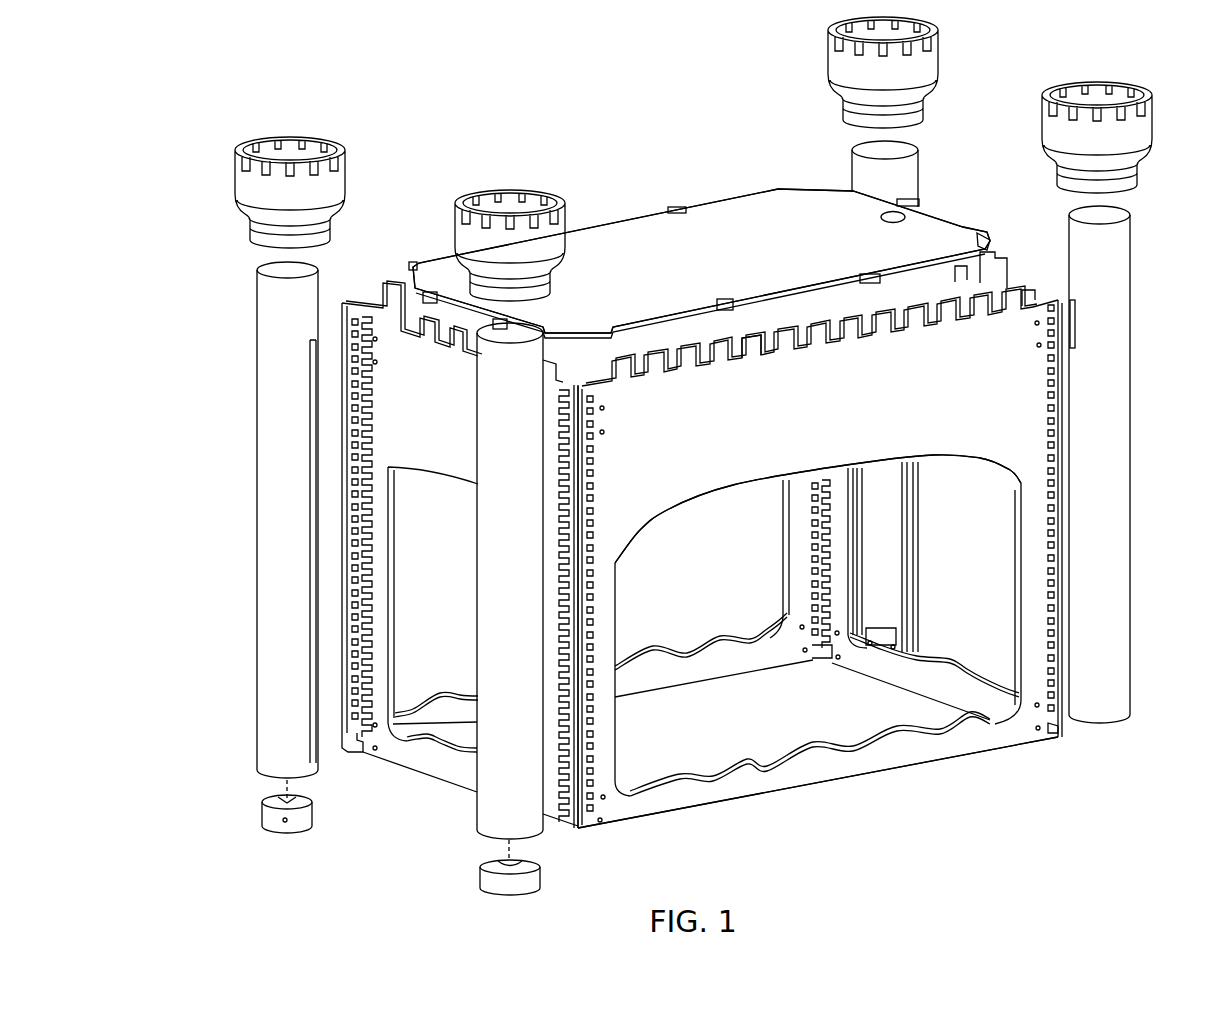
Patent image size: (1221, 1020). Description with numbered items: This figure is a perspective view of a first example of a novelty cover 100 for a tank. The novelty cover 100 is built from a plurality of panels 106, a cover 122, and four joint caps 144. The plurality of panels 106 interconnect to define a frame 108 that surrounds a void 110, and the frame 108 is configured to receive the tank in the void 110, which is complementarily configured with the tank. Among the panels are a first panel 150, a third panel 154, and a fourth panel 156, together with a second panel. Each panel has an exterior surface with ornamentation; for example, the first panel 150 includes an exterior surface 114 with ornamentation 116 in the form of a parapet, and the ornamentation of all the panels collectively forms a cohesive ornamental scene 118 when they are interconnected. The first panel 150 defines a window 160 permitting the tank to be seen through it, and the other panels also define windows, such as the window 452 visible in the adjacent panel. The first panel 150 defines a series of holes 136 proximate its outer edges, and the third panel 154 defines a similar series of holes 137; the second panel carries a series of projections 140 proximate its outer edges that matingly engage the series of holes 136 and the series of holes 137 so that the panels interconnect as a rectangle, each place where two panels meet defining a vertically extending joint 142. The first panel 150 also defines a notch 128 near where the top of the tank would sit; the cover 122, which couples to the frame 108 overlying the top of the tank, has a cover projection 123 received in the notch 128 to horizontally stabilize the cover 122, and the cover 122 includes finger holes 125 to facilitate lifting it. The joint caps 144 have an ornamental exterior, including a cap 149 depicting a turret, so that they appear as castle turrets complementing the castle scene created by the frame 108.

The novelty cover 100 is at (150, 95).
The plurality of panels 106 is at (780, 821).
The frame 108 is at (384, 276).
The void 110 is at (730, 622).
The exterior surface 114 is at (855, 405).
The ornamentation 116 is at (948, 338).
The cohesive ornamental scene 118 is at (578, 183).
The cover 122 is at (715, 220).
The cover projection 123 is at (727, 299).
The finger holes 125 is at (885, 213).
The notch 128 is at (742, 365).
The series of holes 136 is at (598, 450).
The series of holes 137 is at (355, 312).
The series of projections 140 is at (568, 388).
The vertically extending joint 142 is at (569, 836).
The joint caps 144 is at (270, 322).
The cap 149 is at (248, 192).
The first panel 150 is at (755, 430).
The third panel 154 is at (665, 680).
The fourth panel 156 is at (878, 668).
The window 160 is at (685, 505).
The side window 452 is at (398, 420).